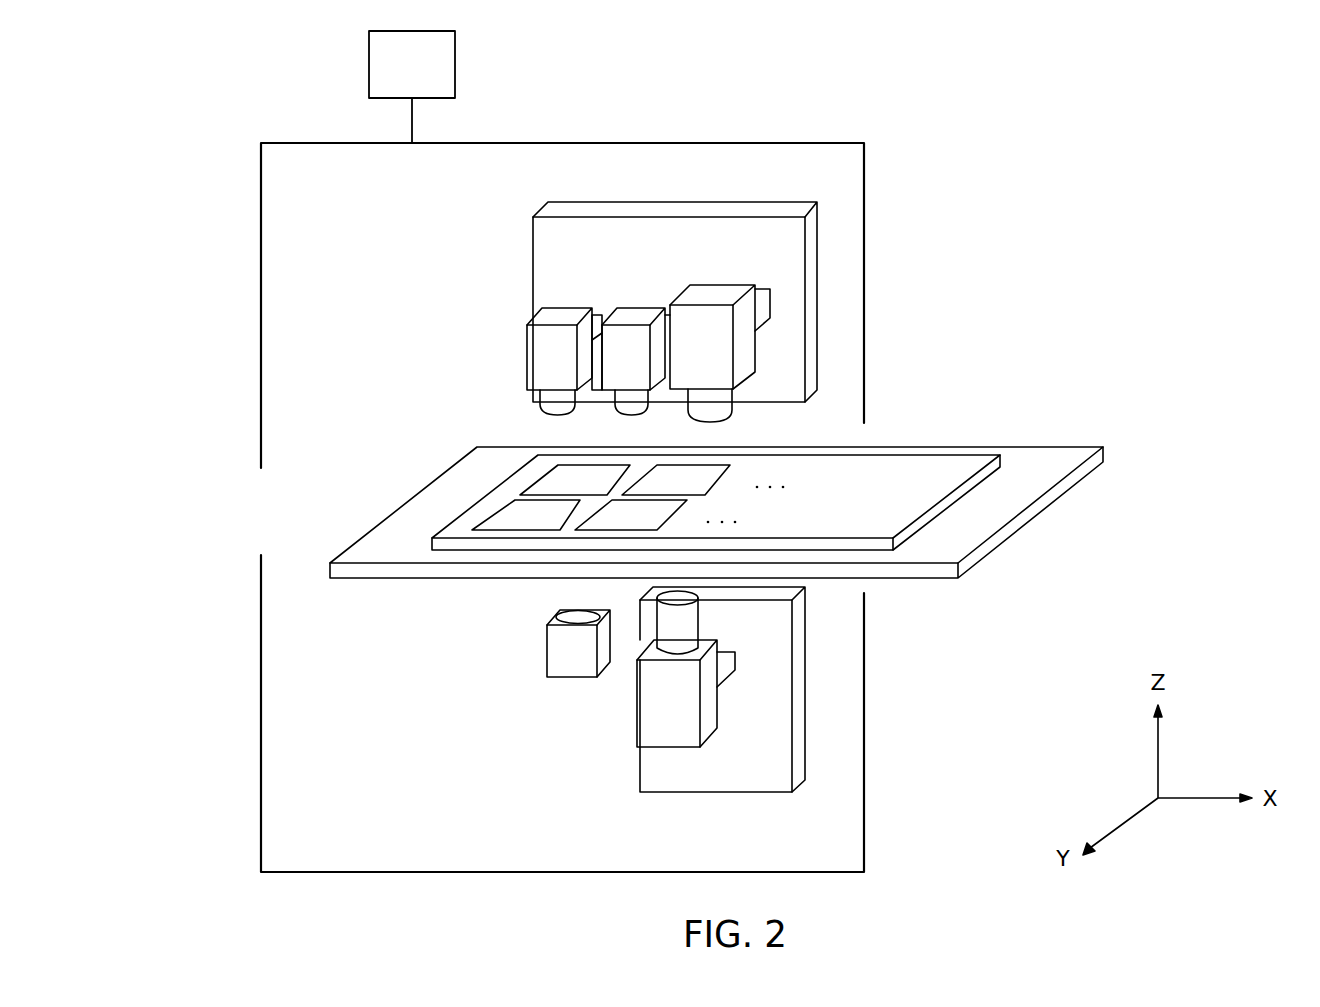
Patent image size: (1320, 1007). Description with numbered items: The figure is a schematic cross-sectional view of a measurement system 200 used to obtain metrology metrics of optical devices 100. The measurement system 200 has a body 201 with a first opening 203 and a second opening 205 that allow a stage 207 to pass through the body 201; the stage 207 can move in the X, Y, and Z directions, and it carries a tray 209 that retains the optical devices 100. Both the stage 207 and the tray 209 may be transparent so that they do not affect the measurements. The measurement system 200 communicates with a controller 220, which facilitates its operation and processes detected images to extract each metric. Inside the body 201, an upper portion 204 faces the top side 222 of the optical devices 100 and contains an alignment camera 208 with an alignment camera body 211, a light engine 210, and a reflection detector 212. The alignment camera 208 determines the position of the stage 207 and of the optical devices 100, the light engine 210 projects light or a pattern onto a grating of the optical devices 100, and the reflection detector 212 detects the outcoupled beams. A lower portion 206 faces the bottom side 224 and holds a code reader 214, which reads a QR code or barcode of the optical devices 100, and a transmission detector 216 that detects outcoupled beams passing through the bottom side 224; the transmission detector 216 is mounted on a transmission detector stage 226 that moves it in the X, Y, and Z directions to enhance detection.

The optical devices 100 is at (513, 517).
The measurement system 200 is at (940, 110).
The body 201 is at (864, 230).
The first opening 203 is at (606, 347).
The upper portion 204 is at (350, 267).
The second opening 205 is at (864, 428).
The lower portion 206 is at (403, 782).
The stage 207 is at (1022, 534).
The alignment camera 208 is at (558, 318).
The tray 209 is at (982, 485).
The light engine 210 is at (636, 318).
The alignment camera body 211 is at (527, 345).
The reflection detector 212 is at (704, 295).
The code reader 214 is at (568, 662).
The transmission detector 216 is at (648, 718).
The controller 220 is at (430, 77).
The top side 222 is at (710, 470).
The bottom side 224 is at (722, 500).
The transmission detector stage 226 is at (800, 685).